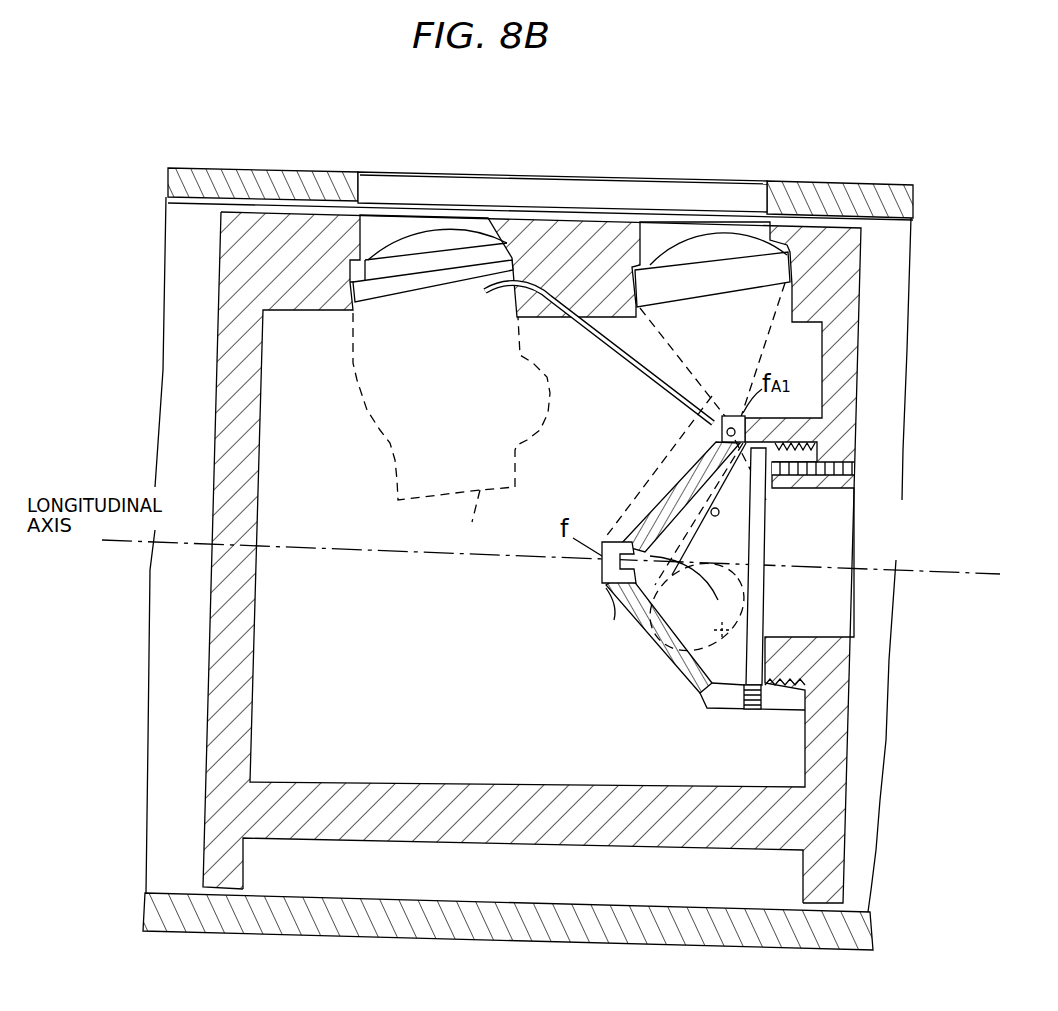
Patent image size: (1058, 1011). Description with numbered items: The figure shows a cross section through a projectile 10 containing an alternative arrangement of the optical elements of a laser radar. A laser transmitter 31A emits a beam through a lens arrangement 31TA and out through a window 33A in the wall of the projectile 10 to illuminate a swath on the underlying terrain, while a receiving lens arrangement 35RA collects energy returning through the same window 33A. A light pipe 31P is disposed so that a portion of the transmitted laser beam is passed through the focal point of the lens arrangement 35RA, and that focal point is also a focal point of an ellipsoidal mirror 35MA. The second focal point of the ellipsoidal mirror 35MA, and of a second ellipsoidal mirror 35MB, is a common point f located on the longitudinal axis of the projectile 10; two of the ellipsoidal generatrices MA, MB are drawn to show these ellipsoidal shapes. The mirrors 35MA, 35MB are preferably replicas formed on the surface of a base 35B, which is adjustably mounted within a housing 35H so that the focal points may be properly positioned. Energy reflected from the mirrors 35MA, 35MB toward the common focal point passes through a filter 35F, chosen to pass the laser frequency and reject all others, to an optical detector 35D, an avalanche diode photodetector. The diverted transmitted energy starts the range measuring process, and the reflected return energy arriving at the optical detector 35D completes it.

The projectile 10 is at (155, 448).
The lens arrangement 31TA is at (372, 197).
The window 33A is at (548, 179).
The lens arrangement 35RA is at (775, 266).
The light pipe 31P is at (637, 357).
The laser transmitter 31A is at (413, 429).
The ellipsoidal generatrix MA is at (640, 490).
The ellipsoidal mirror 35MA is at (713, 513).
The ellipsoidal mirror 35MB is at (660, 566).
The optical detector 35D is at (601, 566).
The filter 35F is at (657, 618).
The base 35B is at (763, 605).
The housing 35H is at (693, 692).
The ellipsoidal generatrix MB is at (668, 660).